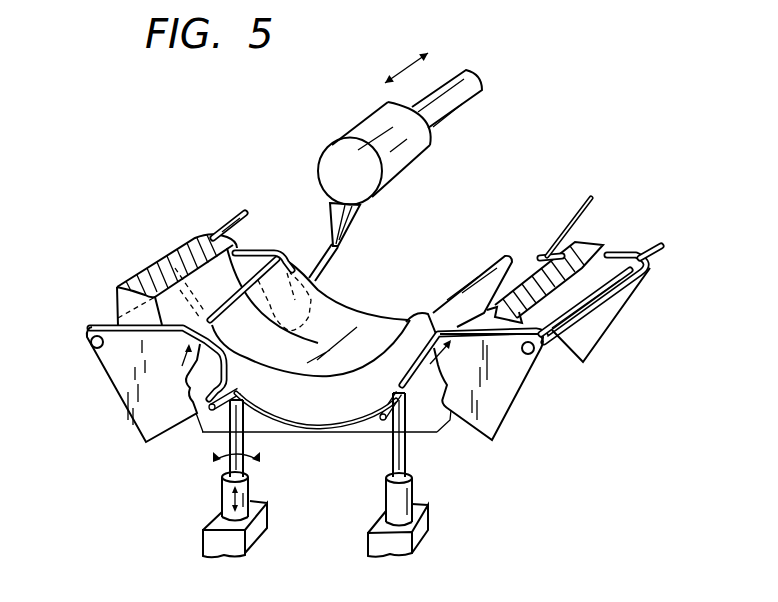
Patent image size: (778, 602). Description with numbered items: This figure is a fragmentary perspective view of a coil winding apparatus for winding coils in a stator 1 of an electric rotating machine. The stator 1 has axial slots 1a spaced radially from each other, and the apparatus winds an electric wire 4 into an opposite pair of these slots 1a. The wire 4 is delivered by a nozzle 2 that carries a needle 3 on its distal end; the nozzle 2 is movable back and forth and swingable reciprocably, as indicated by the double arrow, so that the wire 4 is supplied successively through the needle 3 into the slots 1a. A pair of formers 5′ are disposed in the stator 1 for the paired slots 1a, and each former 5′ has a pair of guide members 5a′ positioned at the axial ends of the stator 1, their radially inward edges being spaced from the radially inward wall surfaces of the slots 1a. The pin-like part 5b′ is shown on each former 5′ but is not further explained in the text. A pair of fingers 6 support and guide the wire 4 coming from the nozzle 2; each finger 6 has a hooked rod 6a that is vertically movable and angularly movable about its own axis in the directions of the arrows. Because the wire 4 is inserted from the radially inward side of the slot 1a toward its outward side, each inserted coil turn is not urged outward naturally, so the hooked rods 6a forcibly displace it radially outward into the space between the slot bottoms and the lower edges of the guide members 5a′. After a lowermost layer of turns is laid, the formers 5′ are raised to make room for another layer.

The stator 1 is at (156, 262).
The axial slot 1a is at (470, 288).
The nozzle 2 is at (350, 128).
The needle 3 is at (334, 222).
The electric wire 4 is at (322, 268).
The former 5′ is at (100, 323).
The guide member 5a′ is at (111, 393).
The clamp pin 5b′ is at (230, 226).
The finger 6 is at (220, 495).
The hooked rod 6a is at (226, 447).